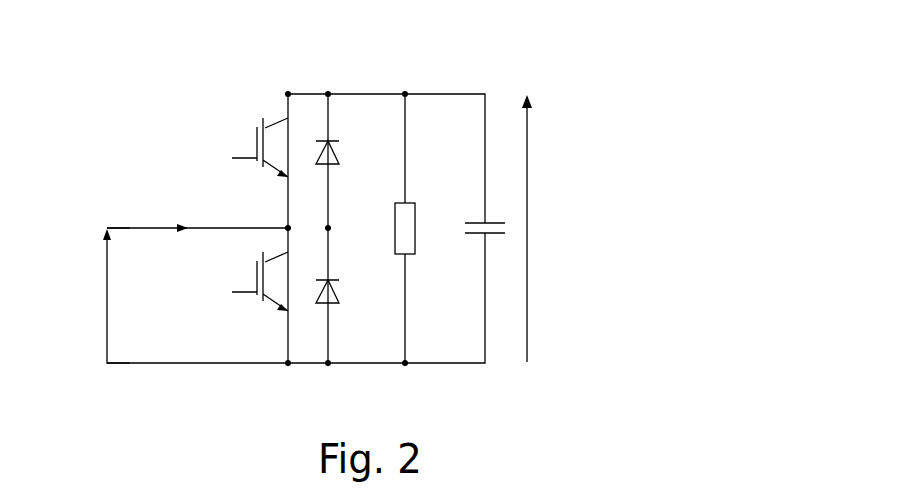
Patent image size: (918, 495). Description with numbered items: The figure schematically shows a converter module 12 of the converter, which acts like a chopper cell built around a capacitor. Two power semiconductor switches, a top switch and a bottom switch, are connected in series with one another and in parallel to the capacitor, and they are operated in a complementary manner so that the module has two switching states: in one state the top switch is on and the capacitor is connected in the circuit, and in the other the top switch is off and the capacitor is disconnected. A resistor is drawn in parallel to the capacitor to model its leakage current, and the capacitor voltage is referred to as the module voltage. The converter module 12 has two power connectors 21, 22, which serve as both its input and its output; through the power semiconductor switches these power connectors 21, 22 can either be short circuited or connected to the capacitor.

The converter module 12 is at (587, 65).
The power connector 21 is at (98, 363).
The power connector 22 is at (102, 211).